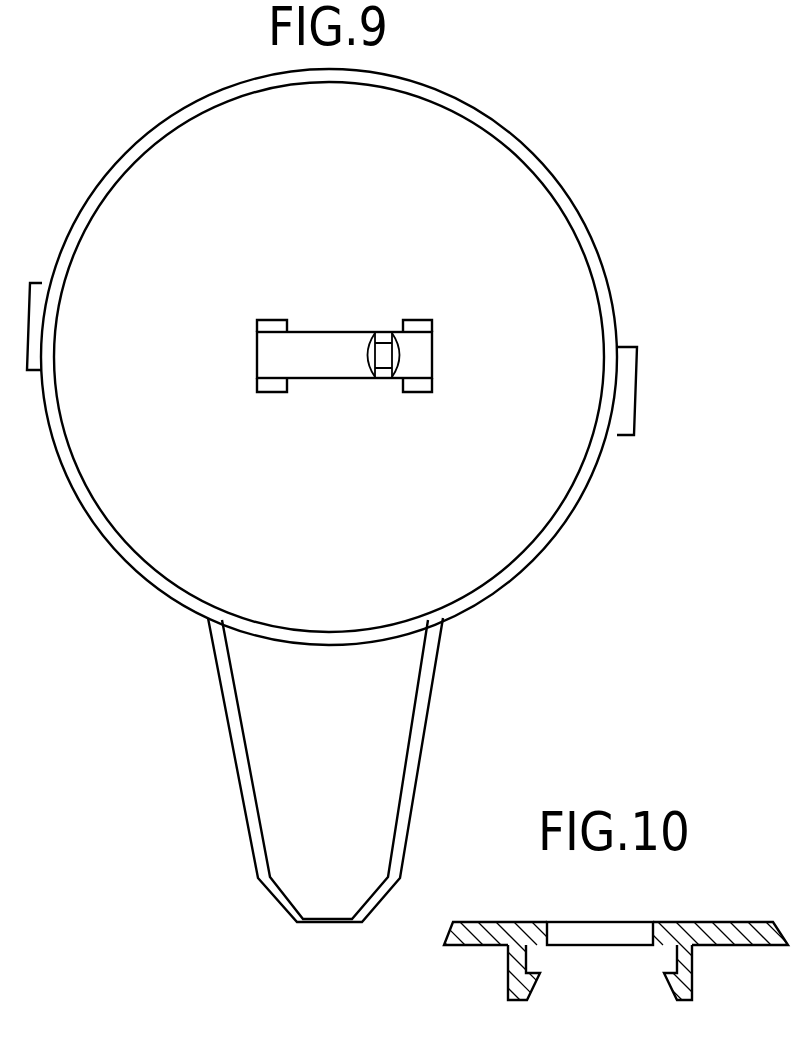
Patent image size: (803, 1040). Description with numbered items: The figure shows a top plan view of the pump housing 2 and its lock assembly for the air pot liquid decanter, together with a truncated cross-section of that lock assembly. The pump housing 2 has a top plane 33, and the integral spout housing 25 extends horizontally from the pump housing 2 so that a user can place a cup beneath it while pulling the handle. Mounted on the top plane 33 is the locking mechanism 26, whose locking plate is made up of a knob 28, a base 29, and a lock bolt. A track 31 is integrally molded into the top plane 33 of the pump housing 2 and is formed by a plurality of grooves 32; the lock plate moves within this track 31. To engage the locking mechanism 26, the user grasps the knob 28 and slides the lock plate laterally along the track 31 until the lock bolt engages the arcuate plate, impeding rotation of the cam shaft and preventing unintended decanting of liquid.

In FIG. 9, the pump housing 2 is at (552, 173).
In FIG. 9, the top plane 33 is at (220, 133).
In FIG. 10, the top plane 33 is at (718, 922).
In FIG. 9, the integral spout housing 25 is at (241, 800).
In FIG. 9, the locking mechanism 26 is at (318, 332).
In FIG. 9, the knob 28 is at (383, 336).
In FIG. 9, the base 29 is at (272, 350).
In FIG. 10, the track 31 is at (508, 978).
In FIG. 10, the grooves 32 is at (543, 960).